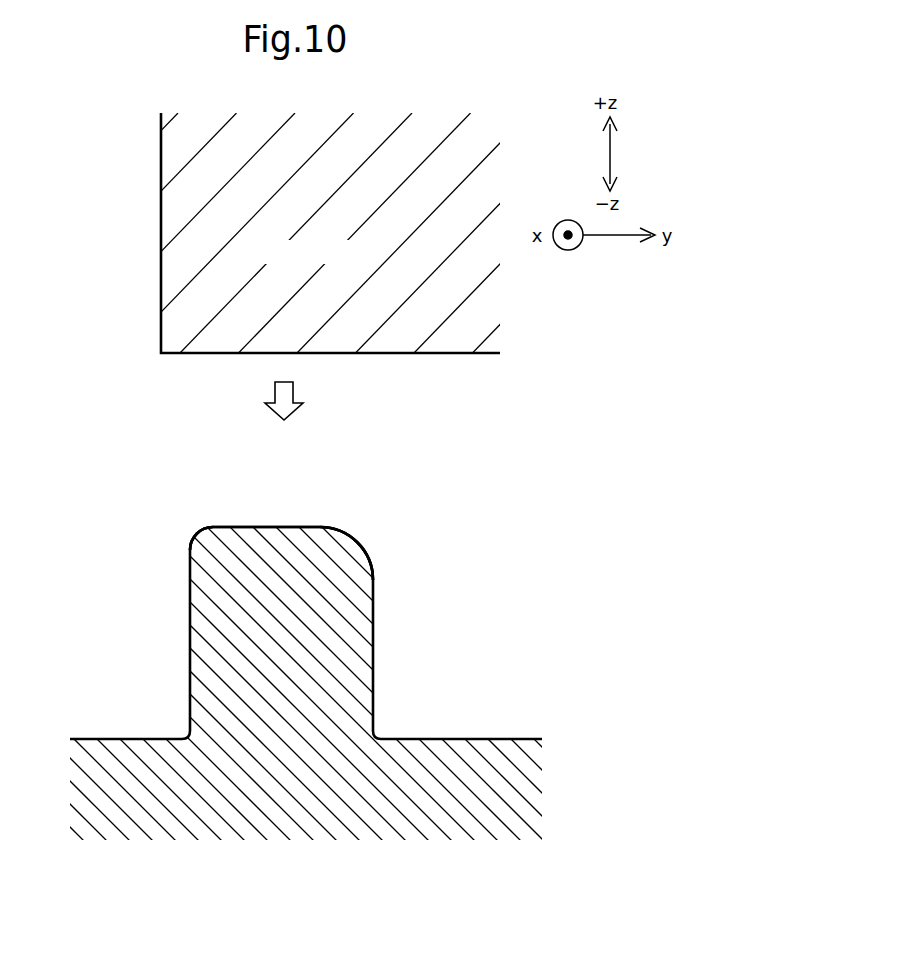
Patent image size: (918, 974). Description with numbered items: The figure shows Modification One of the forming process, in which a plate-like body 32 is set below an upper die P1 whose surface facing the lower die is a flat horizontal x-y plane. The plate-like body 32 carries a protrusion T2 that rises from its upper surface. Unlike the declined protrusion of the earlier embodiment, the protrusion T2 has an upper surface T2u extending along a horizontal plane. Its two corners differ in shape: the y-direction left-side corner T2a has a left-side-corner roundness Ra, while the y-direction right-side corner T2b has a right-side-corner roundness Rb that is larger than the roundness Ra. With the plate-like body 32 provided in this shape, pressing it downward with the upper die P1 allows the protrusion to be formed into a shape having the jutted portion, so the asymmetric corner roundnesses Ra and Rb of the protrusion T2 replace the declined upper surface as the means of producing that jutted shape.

The upper die P1 is at (427, 353).
The plate-like body 32 is at (478, 739).
The protrusion T2 is at (200, 645).
The left-side corner of protrusion T2a is at (194, 537).
The upper surface of protrusion T2u is at (285, 526).
The right-side corner of protrusion T2b is at (366, 545).
The left-side-corner roundness Ra is at (202, 538).
The right-side-corner roundness Rb is at (348, 547).